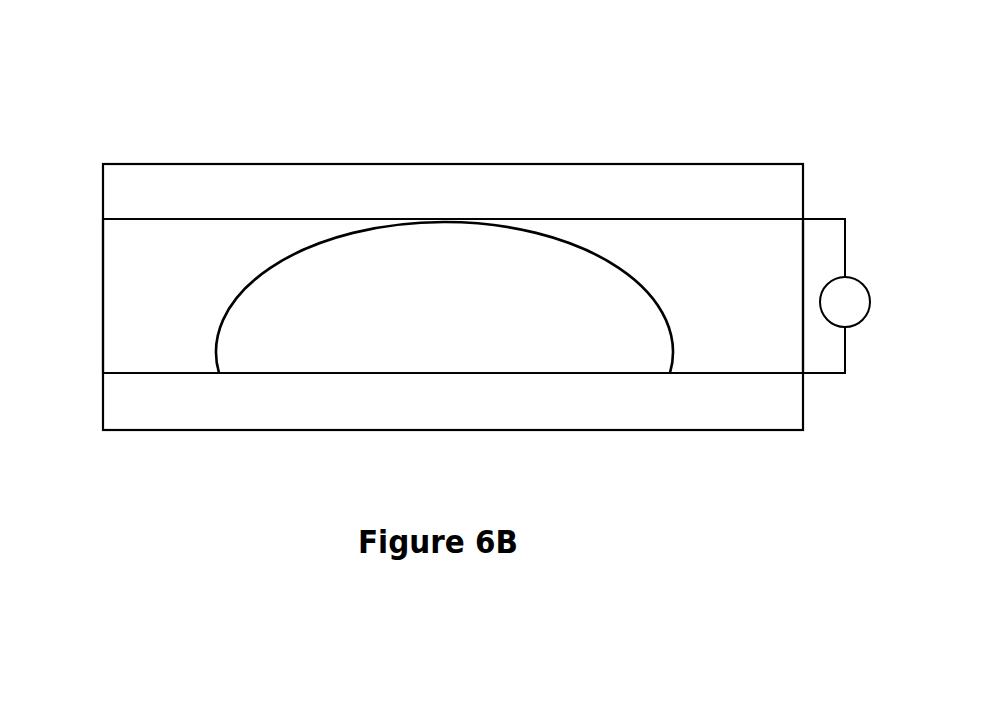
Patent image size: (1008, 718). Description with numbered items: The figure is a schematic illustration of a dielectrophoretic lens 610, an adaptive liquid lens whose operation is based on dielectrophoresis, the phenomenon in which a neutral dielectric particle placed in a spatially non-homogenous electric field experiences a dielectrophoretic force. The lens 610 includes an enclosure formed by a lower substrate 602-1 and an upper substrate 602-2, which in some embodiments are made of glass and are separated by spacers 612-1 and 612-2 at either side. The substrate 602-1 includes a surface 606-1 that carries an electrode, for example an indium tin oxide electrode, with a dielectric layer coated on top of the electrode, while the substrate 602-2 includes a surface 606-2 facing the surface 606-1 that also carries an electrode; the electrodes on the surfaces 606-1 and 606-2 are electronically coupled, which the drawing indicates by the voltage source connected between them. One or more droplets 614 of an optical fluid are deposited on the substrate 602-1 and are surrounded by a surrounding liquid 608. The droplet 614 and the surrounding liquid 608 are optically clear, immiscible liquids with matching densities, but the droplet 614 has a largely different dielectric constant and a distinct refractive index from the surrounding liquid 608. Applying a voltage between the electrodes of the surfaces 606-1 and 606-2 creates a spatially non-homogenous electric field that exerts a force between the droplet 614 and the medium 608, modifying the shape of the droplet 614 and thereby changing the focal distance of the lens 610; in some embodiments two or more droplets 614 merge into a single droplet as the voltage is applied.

The dielectrophoretic lens 610 is at (166, 92).
The substrate 602-2 is at (482, 203).
The substrate 602-1 is at (482, 420).
The surrounding liquid 608 is at (781, 261).
The droplet 614 is at (470, 340).
The surface 606-2 is at (793, 219).
The surface 606-1 is at (793, 378).
The spacer 612-1 is at (103, 283).
The spacer 612-2 is at (805, 330).